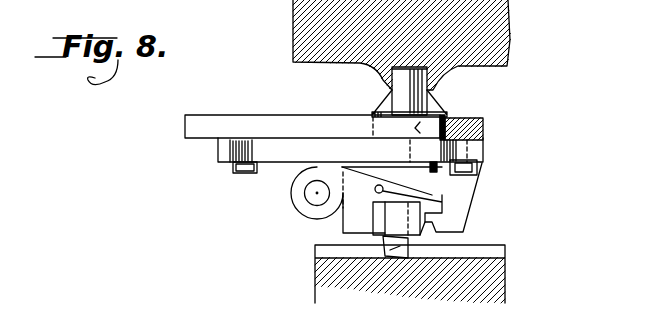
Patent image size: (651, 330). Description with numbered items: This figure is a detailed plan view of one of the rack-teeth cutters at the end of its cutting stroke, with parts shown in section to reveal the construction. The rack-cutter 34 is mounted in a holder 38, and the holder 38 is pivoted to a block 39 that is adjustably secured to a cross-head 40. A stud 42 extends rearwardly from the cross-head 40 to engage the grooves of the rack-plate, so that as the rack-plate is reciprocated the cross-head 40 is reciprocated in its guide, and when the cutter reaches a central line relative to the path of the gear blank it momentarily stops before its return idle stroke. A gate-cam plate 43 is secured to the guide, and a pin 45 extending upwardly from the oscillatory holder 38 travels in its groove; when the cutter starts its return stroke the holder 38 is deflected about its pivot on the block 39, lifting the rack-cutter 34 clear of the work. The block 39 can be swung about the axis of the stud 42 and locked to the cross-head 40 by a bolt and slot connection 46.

The rack-cutter 34 is at (385, 262).
The holder 38 is at (350, 198).
The block 39 is at (300, 152).
The cross-head 40 is at (292, 125).
The stud 42 is at (392, 79).
The plate 43 is at (411, 84).
The pin 45 is at (383, 191).
The bolt and slot connection 46 is at (238, 167).